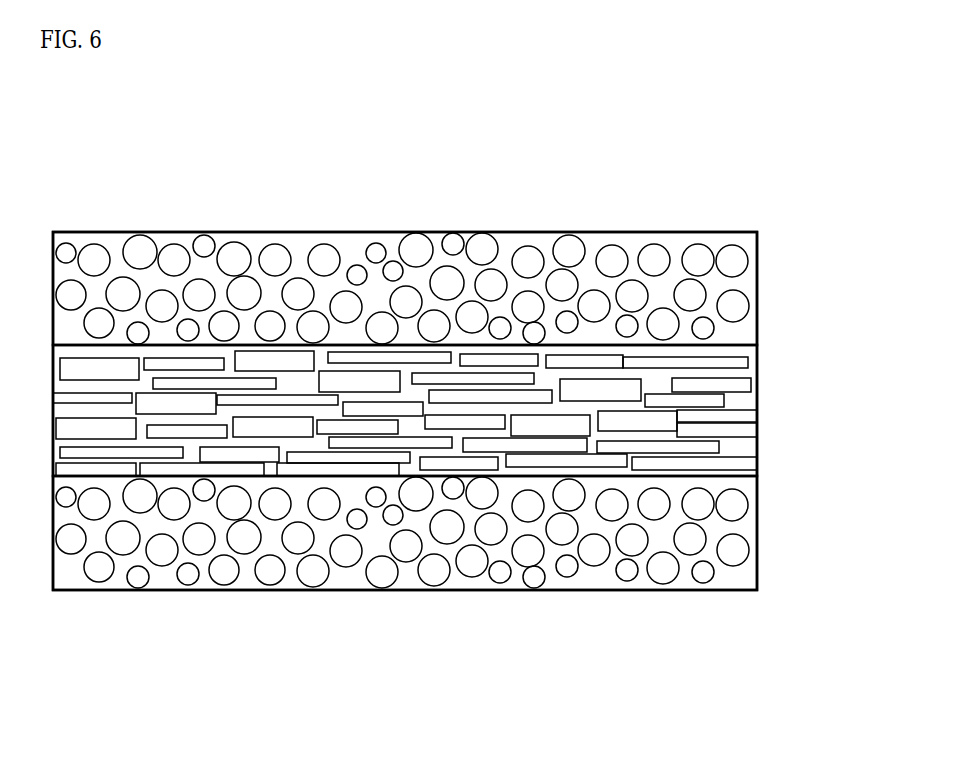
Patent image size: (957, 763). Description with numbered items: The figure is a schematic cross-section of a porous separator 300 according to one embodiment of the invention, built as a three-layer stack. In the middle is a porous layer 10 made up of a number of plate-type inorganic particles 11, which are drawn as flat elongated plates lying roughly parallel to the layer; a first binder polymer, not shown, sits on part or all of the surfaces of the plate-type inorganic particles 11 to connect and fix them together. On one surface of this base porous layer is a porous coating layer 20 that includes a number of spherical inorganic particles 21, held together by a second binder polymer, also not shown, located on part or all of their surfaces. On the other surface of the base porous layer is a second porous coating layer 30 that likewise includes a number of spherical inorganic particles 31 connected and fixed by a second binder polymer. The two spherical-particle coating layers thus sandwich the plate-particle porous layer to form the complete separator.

The porous separator 300 is at (180, 112).
The porous coating layer 20 is at (438, 242).
The spherical inorganic particles 21 is at (740, 262).
The porous layer 10 is at (465, 410).
The plate-type inorganic particles 11 is at (746, 386).
The porous coating layer 30 is at (436, 581).
The spherical inorganic particles 31 is at (740, 549).